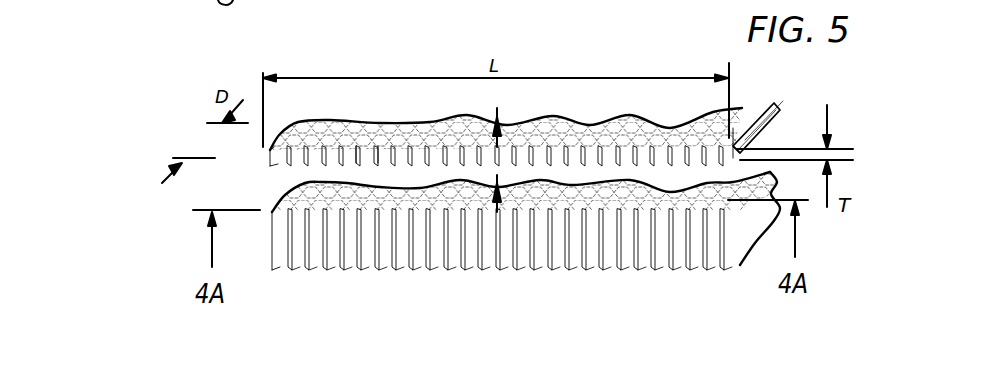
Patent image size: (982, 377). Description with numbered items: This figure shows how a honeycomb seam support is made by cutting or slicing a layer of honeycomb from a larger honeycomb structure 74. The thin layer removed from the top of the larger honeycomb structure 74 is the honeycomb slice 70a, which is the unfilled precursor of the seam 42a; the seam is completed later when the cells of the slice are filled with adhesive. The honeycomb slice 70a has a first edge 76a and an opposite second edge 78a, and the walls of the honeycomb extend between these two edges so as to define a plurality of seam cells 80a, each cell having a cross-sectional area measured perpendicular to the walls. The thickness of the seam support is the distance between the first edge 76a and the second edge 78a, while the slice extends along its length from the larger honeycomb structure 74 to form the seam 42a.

The honeycomb slice 70a is at (295, 163).
The larger honeycomb structure 74 is at (735, 238).
The first edge 76a is at (360, 147).
The seam cells 80a is at (382, 157).
The second edge 78a is at (585, 163).
The seam 42a is at (768, 132).